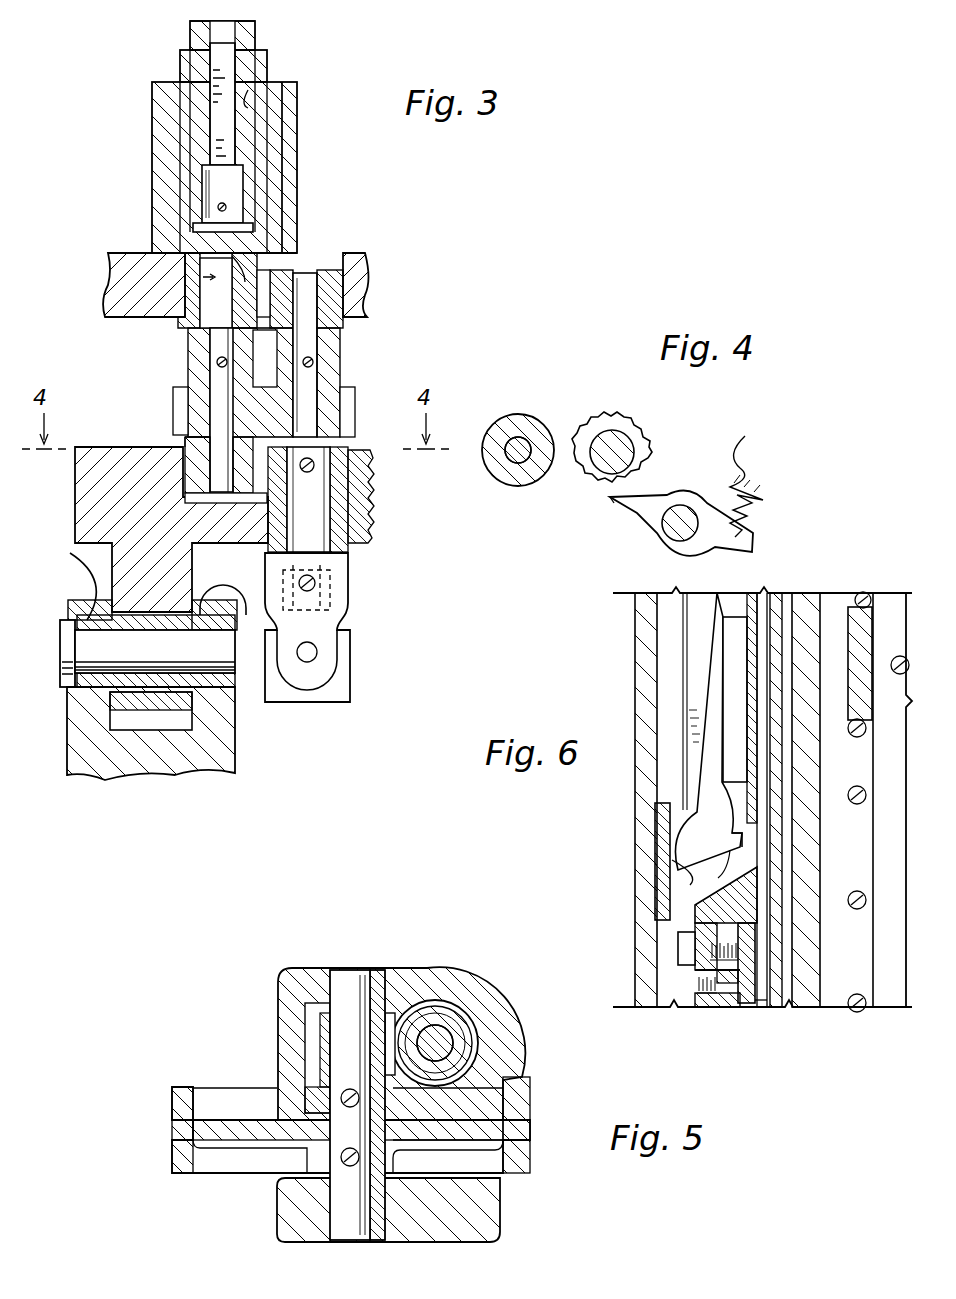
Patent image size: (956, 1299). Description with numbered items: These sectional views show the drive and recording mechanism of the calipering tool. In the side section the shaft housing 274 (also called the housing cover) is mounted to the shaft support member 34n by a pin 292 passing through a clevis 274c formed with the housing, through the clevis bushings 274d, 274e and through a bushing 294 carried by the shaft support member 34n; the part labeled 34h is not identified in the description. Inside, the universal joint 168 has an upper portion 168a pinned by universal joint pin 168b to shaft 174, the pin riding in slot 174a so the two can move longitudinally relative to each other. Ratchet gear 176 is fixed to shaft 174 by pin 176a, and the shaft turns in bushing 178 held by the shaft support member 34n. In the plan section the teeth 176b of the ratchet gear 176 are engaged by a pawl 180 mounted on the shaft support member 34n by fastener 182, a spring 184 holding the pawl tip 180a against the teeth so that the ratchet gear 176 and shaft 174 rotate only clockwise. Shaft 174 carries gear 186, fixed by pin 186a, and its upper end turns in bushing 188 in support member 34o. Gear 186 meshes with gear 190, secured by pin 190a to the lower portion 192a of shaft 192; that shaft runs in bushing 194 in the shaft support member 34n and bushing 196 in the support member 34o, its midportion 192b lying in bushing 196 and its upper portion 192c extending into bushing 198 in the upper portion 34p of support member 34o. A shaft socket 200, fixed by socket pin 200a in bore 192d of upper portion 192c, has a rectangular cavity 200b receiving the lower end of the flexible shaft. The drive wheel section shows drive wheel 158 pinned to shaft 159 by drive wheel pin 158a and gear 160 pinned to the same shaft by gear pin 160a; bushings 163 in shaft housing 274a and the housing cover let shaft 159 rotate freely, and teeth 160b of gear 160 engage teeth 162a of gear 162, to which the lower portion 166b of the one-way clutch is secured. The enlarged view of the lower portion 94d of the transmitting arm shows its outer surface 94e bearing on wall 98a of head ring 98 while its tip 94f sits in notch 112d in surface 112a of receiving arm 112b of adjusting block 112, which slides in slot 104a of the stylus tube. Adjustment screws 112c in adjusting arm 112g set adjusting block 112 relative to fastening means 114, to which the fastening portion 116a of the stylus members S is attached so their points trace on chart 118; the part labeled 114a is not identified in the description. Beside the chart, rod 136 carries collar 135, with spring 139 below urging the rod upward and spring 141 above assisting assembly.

In FIG. 3, the shaft socket 200 is at (258, 24).
In FIG. 3, the cavity 200b is at (220, 62).
In FIG. 3, the bore 192d is at (248, 97).
In FIG. 3, the upper portion of support member 34p is at (290, 100).
In FIG. 3, the upper portion of shaft 192c is at (260, 122).
In FIG. 3, the bushing 198 is at (275, 155).
In FIG. 3, the socket pin 200a is at (226, 207).
In FIG. 3, the shaft 192 is at (205, 268).
In FIG. 4, the shaft 192 is at (520, 445).
In FIG. 3, the midportion of shaft 192b is at (230, 278).
In FIG. 3, the bushing 196 is at (207, 285).
In FIG. 3, the support member 34o is at (358, 263).
In FIG. 3, the bushing 188 is at (333, 285).
In FIG. 3, the gear 186 is at (333, 340).
In FIG. 3, the pin 186a is at (318, 363).
In FIG. 3, the pin 190a is at (218, 360).
In FIG. 3, the gear 190 is at (215, 382).
In FIG. 3, the lower portion of shaft 192a is at (180, 400).
In FIG. 3, the bushing 194 is at (163, 447).
In FIG. 4, the bushing 194 is at (528, 440).
In FIG. 3, the housing portion 34h is at (80, 476).
In FIG. 3, the pin 176a is at (316, 468).
In FIG. 3, the ratchet gear 176 is at (356, 480).
In FIG. 4, the ratchet gear 176 is at (588, 425).
In FIG. 3, the shaft 174 is at (312, 505).
In FIG. 4, the shaft 174 is at (612, 435).
In FIG. 3, the bushing 178 is at (345, 524).
In FIG. 3, the slot 174a is at (330, 563).
In FIG. 3, the upper portion of universal joint 168a is at (330, 580).
In FIG. 3, the universal joint pin 168b is at (313, 585).
In FIG. 3, the universal joint 168 is at (352, 653).
In FIG. 3, the bushing 274d is at (92, 570).
In FIG. 3, the pin 292 is at (60, 640).
In FIG. 3, the bushing 274e is at (212, 690).
In FIG. 3, the clevis 274c is at (215, 720).
In FIG. 3, the shaft housing 274 is at (91, 766).
In FIG. 5, the shaft housing 274 is at (490, 1205).
In FIG. 3, the bushing 294 is at (153, 690).
In FIG. 4, the teeth 176b is at (632, 412).
In FIG. 4, the pawl 180 is at (637, 513).
In FIG. 4, the tip 180a is at (612, 500).
In FIG. 4, the fastener 182 is at (678, 523).
In FIG. 4, the spring 184 is at (725, 500).
In FIG. 4, the shaft support member 34n is at (745, 436).
In FIG. 6, the chart 118 is at (782, 592).
In FIG. 6, the rod 136 is at (882, 606).
In FIG. 6, the spring 141 is at (846, 606).
In FIG. 6, the slot 104a is at (735, 636).
In FIG. 6, the lower portion of transmitting arm 94d is at (690, 660).
In FIG. 6, the collar 135 is at (850, 720).
In FIG. 6, the outer surface of transmitting arm 94e is at (633, 813).
In FIG. 6, the head ring 98 is at (660, 845).
In FIG. 6, the tip of transmitting arm 94f is at (742, 840).
In FIG. 6, the wall of head ring 98a is at (688, 868).
In FIG. 6, the notch 112d is at (746, 858).
In FIG. 6, the receiving arm 112b is at (700, 886).
In FIG. 6, the surface 112a is at (703, 905).
In FIG. 6, the adjusting block 112 is at (716, 940).
In FIG. 6, the spring 139 is at (848, 903).
In FIG. 6, the spring 114a is at (690, 950).
In FIG. 6, the stylus members S is at (770, 971).
In FIG. 6, the adjustment screws 112c is at (705, 975).
In FIG. 6, the adjusting arm 112g is at (700, 1000).
In FIG. 6, the fastening means 114 is at (728, 1000).
In FIG. 6, the fastening portion 116a is at (790, 1005).
In FIG. 5, the shaft housing 274a is at (305, 975).
In FIG. 5, the bushings 163 is at (376, 975).
In FIG. 5, the teeth 160b is at (390, 1000).
In FIG. 5, the teeth 162a is at (452, 1016).
In FIG. 5, the gear 162 is at (442, 1020).
In FIG. 5, the lower portion of one-way clutch 166b is at (445, 1045).
In FIG. 5, the gear 160 is at (312, 1022).
In FIG. 5, the gear pin 160a is at (350, 1089).
In FIG. 5, the drive wheel 158 is at (532, 1095).
In FIG. 5, the drive wheel pin 158a is at (341, 1157).
In FIG. 5, the shaft 159 is at (348, 1195).